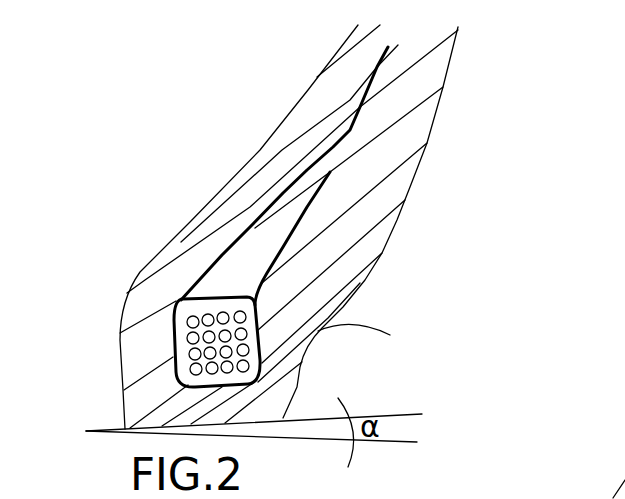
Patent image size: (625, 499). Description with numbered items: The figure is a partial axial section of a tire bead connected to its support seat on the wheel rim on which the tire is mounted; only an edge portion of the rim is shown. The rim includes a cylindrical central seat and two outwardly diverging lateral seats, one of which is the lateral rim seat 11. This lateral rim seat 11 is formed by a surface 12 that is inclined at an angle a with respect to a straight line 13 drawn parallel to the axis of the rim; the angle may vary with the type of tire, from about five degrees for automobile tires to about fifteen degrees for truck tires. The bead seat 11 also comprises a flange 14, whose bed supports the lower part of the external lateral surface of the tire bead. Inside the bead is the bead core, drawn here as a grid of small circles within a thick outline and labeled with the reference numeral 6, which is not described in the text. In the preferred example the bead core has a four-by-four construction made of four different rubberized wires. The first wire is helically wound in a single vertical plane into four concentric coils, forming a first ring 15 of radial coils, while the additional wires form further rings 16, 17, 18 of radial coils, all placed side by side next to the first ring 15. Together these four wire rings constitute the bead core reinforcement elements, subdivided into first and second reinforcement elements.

The perforated pad 6 is at (158, 359).
The lateral rim seat 11 is at (352, 389).
The surface 12 is at (168, 423).
The straight line 13 is at (276, 438).
The flange 14 is at (348, 322).
The first ring of radial coils 15 is at (188, 318).
The ring of radial coils 16 is at (204, 315).
The ring of radial coils 17 is at (219, 313).
The ring of radial coils 18 is at (236, 312).